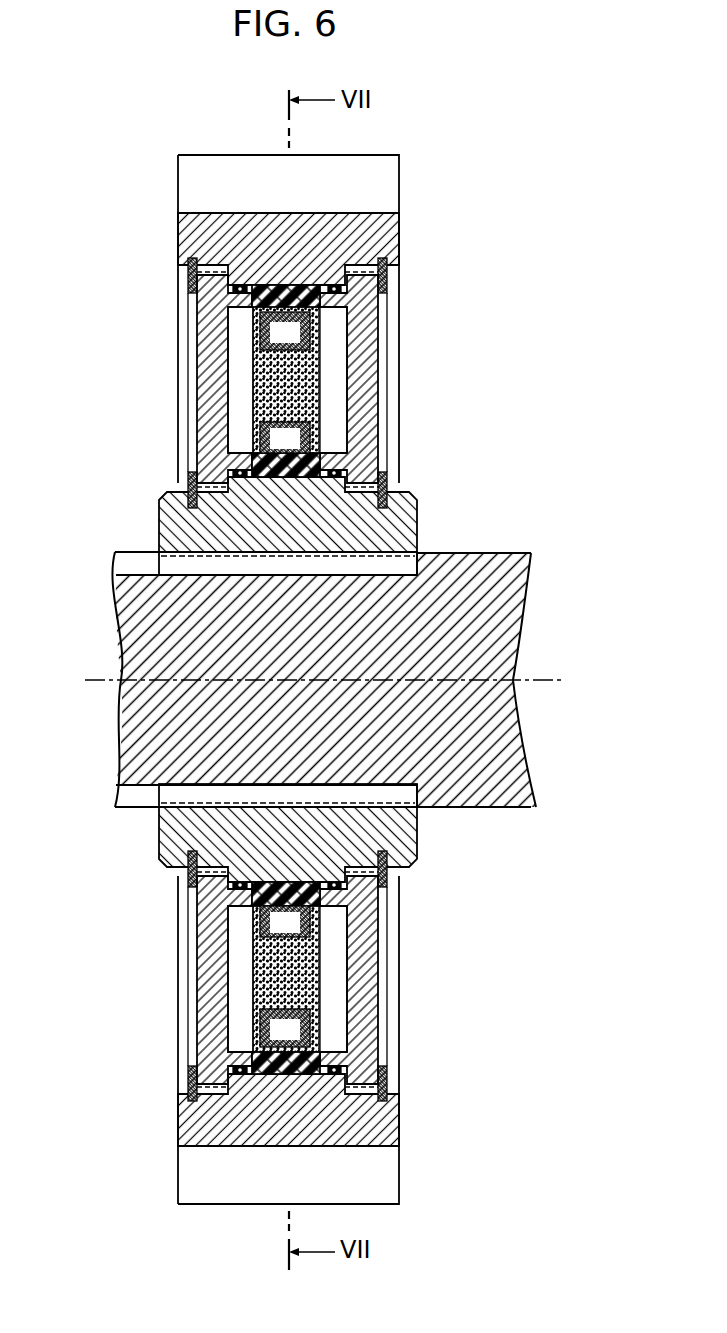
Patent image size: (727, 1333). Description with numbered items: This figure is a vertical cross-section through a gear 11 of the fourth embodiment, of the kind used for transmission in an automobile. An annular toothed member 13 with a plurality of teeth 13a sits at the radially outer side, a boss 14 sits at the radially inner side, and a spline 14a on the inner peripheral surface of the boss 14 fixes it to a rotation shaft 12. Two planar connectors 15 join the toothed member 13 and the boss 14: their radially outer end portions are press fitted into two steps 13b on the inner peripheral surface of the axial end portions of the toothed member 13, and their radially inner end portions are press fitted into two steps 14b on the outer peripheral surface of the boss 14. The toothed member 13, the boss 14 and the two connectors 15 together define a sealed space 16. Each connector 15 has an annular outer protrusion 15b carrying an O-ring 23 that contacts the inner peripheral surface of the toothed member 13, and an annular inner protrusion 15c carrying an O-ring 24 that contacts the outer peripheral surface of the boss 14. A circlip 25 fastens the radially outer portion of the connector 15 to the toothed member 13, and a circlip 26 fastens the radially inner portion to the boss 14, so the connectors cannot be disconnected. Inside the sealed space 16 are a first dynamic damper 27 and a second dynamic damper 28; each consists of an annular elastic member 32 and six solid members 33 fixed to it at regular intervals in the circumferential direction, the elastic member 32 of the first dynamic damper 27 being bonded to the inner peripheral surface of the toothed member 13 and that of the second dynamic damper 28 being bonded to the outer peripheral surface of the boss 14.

The gear 11 is at (492, 290).
The rotation shaft 12 is at (483, 570).
The toothed member 13 is at (407, 233).
The teeth 13a is at (355, 168).
The steps 13b is at (227, 280).
The boss 14 is at (432, 519).
The spline 14a is at (178, 568).
The steps 14b is at (190, 488).
The planar connectors 15 is at (190, 375).
The outer protrusion 15b is at (240, 298).
The inner protrusion 15c is at (240, 453).
The sealed space 16 is at (253, 382).
The O-ring 23 is at (243, 285).
The O-ring 24 is at (240, 478).
The circlip 25 is at (190, 283).
The circlip 26 is at (187, 500).
The first dynamic damper 27 is at (332, 383).
The second dynamic damper 28 is at (330, 436).
The elastic member 32 is at (288, 287).
The solid members 33 is at (273, 343).